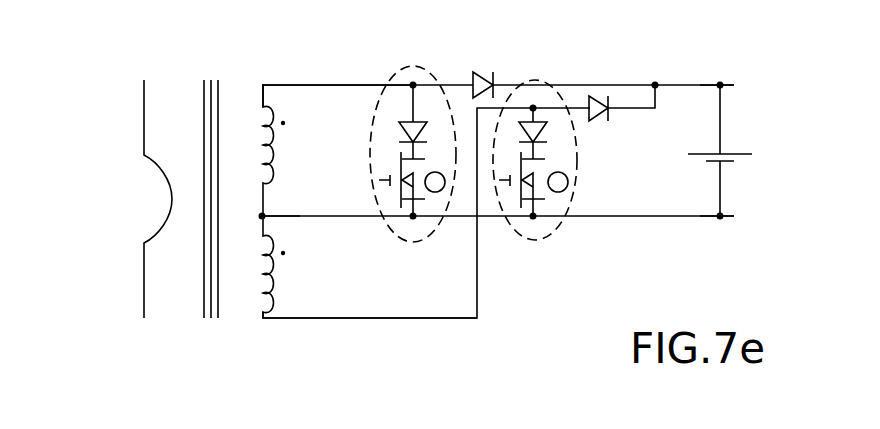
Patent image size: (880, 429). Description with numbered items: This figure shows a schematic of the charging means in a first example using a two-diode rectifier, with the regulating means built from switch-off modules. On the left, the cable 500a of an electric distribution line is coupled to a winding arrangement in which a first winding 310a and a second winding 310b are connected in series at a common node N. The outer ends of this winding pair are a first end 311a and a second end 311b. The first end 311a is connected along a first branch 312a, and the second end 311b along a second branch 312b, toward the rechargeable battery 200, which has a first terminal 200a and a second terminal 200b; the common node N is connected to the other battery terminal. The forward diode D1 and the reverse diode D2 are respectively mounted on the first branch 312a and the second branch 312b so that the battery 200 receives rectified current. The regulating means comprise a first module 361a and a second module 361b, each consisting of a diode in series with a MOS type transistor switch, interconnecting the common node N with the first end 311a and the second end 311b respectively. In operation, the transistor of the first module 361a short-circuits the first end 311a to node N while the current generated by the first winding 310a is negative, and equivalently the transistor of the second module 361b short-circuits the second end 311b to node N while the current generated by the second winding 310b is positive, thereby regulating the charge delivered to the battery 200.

The cable 500a is at (143, 143).
The first winding 310a is at (259, 154).
The second winding 310b is at (258, 278).
The first end 311a is at (263, 83).
The second end 311b is at (263, 320).
The first branch 312a is at (353, 84).
The second branch 312b is at (407, 320).
The common node N is at (261, 217).
The first module 361a is at (437, 227).
The second module 361b is at (557, 230).
The forward diode D1 is at (483, 73).
The reverse diode D2 is at (603, 98).
The rechargeable battery 200 is at (722, 151).
The first terminal 200a is at (720, 84).
The second terminal 200b is at (724, 218).